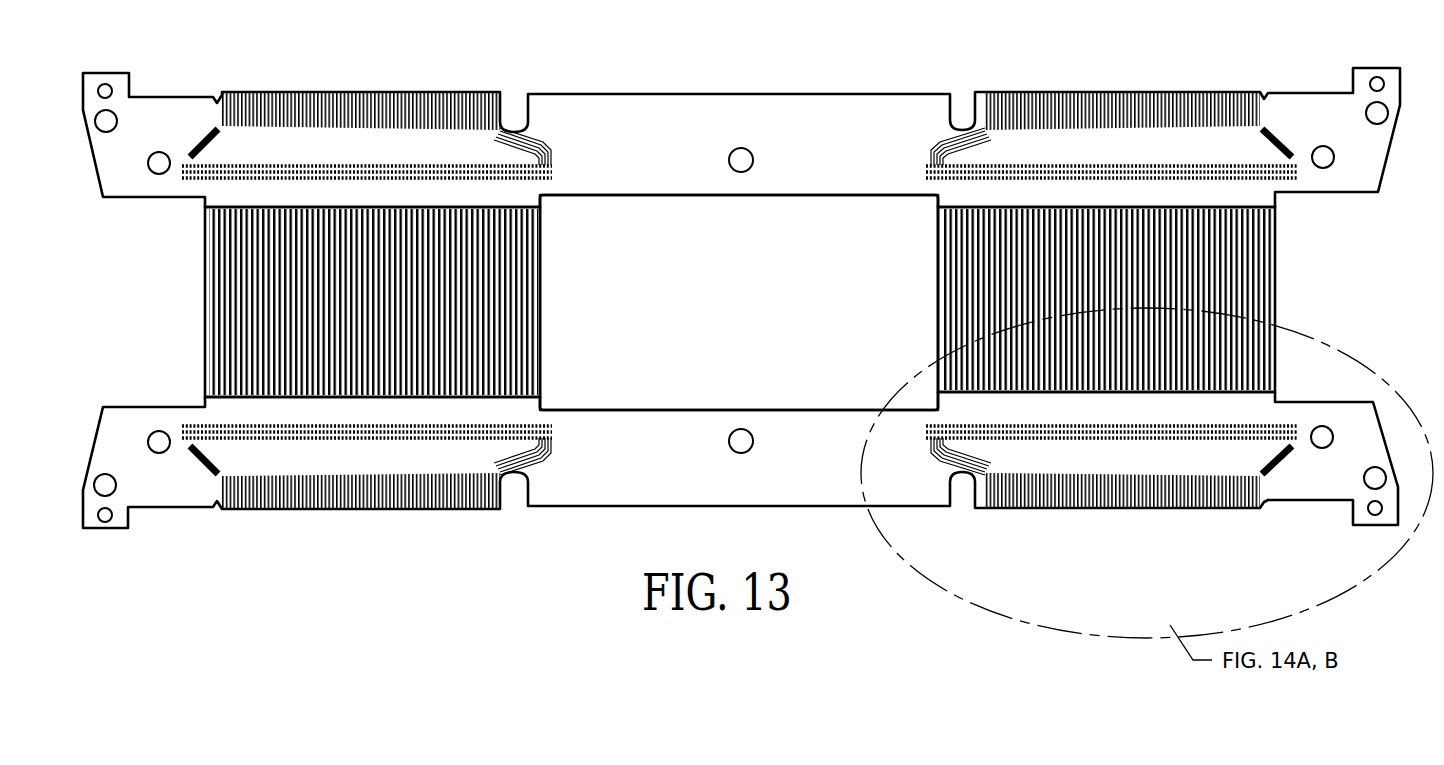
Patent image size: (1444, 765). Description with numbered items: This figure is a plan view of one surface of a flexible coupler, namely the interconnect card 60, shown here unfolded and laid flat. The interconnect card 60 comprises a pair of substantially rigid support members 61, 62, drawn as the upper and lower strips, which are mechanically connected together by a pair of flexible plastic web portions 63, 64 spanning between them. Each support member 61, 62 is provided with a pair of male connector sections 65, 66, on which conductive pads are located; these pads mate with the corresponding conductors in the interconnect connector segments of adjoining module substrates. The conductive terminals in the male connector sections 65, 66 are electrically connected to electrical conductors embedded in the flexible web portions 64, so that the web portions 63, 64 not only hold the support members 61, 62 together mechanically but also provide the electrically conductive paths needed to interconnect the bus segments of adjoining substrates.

The interconnect card 60 is at (818, 94).
The support member 61 is at (713, 94).
The support member 62 is at (680, 506).
The flexible plastic web portion 63 is at (540, 262).
The flexible plastic web portion 64 is at (938, 338).
The male connector section 65 is at (337, 92).
The male connector section 66 is at (1133, 92).